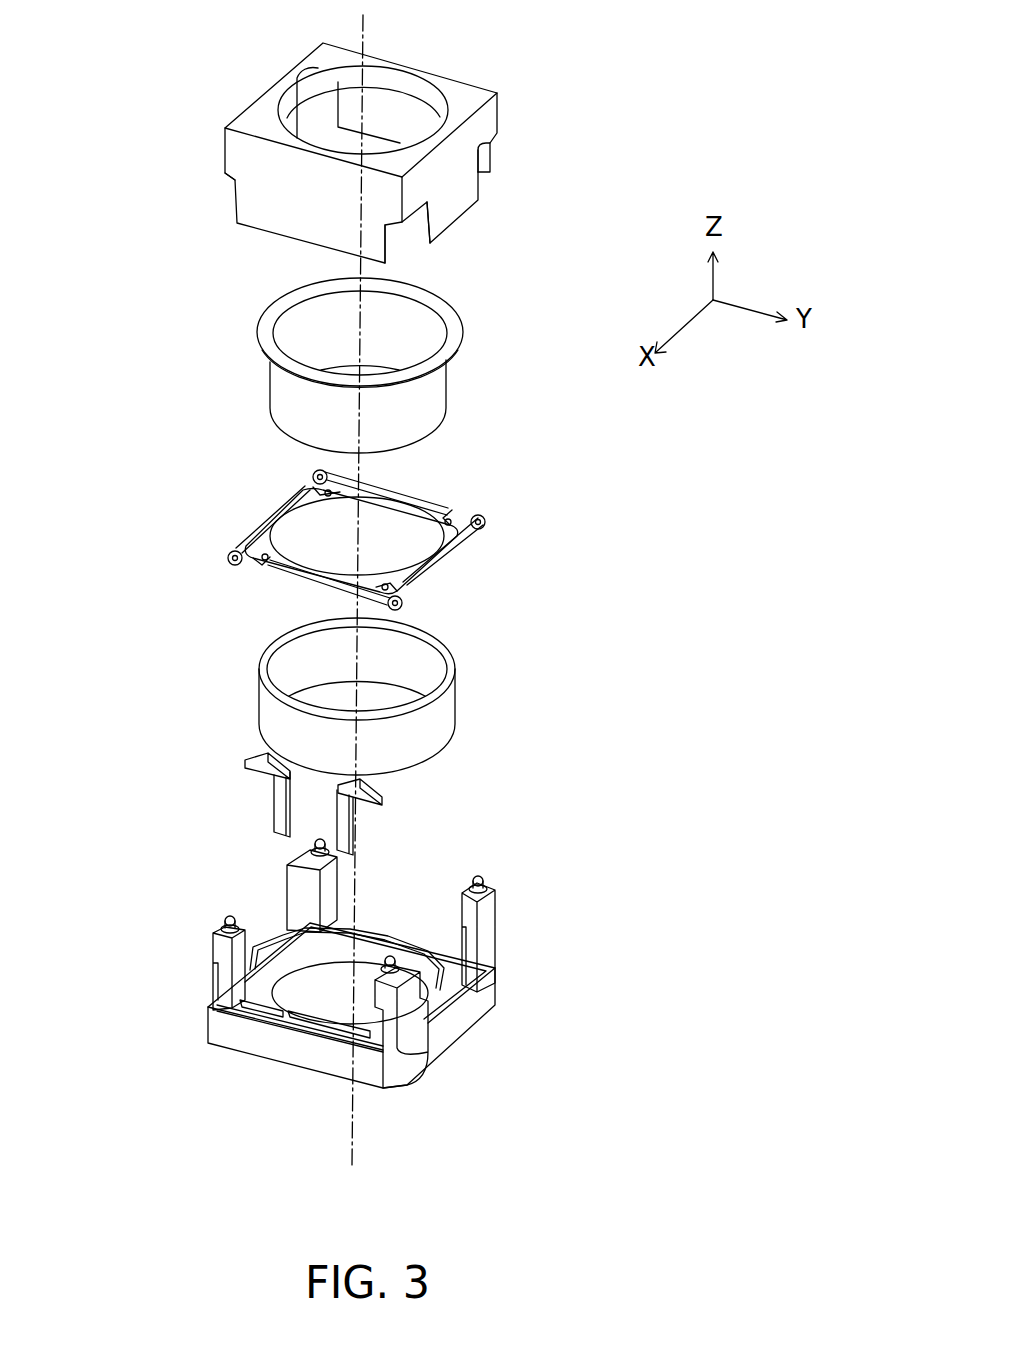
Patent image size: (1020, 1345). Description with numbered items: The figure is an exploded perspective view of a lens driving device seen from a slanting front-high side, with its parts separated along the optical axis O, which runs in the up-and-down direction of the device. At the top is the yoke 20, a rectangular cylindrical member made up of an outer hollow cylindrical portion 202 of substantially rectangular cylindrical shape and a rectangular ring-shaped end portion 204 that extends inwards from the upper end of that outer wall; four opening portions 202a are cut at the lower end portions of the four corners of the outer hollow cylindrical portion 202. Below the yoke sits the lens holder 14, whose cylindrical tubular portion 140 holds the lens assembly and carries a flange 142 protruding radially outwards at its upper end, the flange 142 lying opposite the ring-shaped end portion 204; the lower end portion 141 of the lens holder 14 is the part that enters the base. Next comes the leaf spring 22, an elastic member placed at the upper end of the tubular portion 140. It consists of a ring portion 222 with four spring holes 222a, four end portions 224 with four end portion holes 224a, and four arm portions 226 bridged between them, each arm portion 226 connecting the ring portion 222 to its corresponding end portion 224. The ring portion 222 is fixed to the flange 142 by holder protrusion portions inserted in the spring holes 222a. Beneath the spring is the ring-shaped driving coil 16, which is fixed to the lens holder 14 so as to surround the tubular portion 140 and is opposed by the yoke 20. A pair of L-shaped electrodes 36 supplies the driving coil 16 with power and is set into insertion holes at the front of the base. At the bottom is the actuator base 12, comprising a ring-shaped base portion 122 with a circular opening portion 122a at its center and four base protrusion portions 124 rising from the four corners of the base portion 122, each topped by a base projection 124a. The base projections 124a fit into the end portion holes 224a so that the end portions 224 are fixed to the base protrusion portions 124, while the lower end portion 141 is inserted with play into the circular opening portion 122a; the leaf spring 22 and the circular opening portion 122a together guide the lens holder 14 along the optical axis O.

The optical axis O is at (363, 38).
The yoke 20 is at (368, 153).
The outer hollow cylindrical portion 202 is at (237, 212).
The opening portions 202a is at (297, 87).
The ring-shaped end portion 204 is at (465, 92).
The lens holder 14 is at (451, 363).
The tubular portion 140 is at (438, 378).
The lower end portion 141 is at (427, 443).
The flange 142 is at (447, 300).
The leaf spring 22 is at (355, 524).
The ring portion 222 is at (383, 503).
The spring holes 222a is at (450, 518).
The end portions 224 is at (300, 484).
The end portion holes 224a is at (316, 471).
The arm portions 226 is at (390, 492).
The driving coil 16 is at (472, 673).
The electrodes 36 is at (231, 767).
The actuator base 12 is at (358, 982).
The base portion 122 is at (450, 1035).
The circular opening portion 122a is at (373, 923).
The base protrusion portions 124 is at (283, 880).
The base projections 124a is at (313, 846).